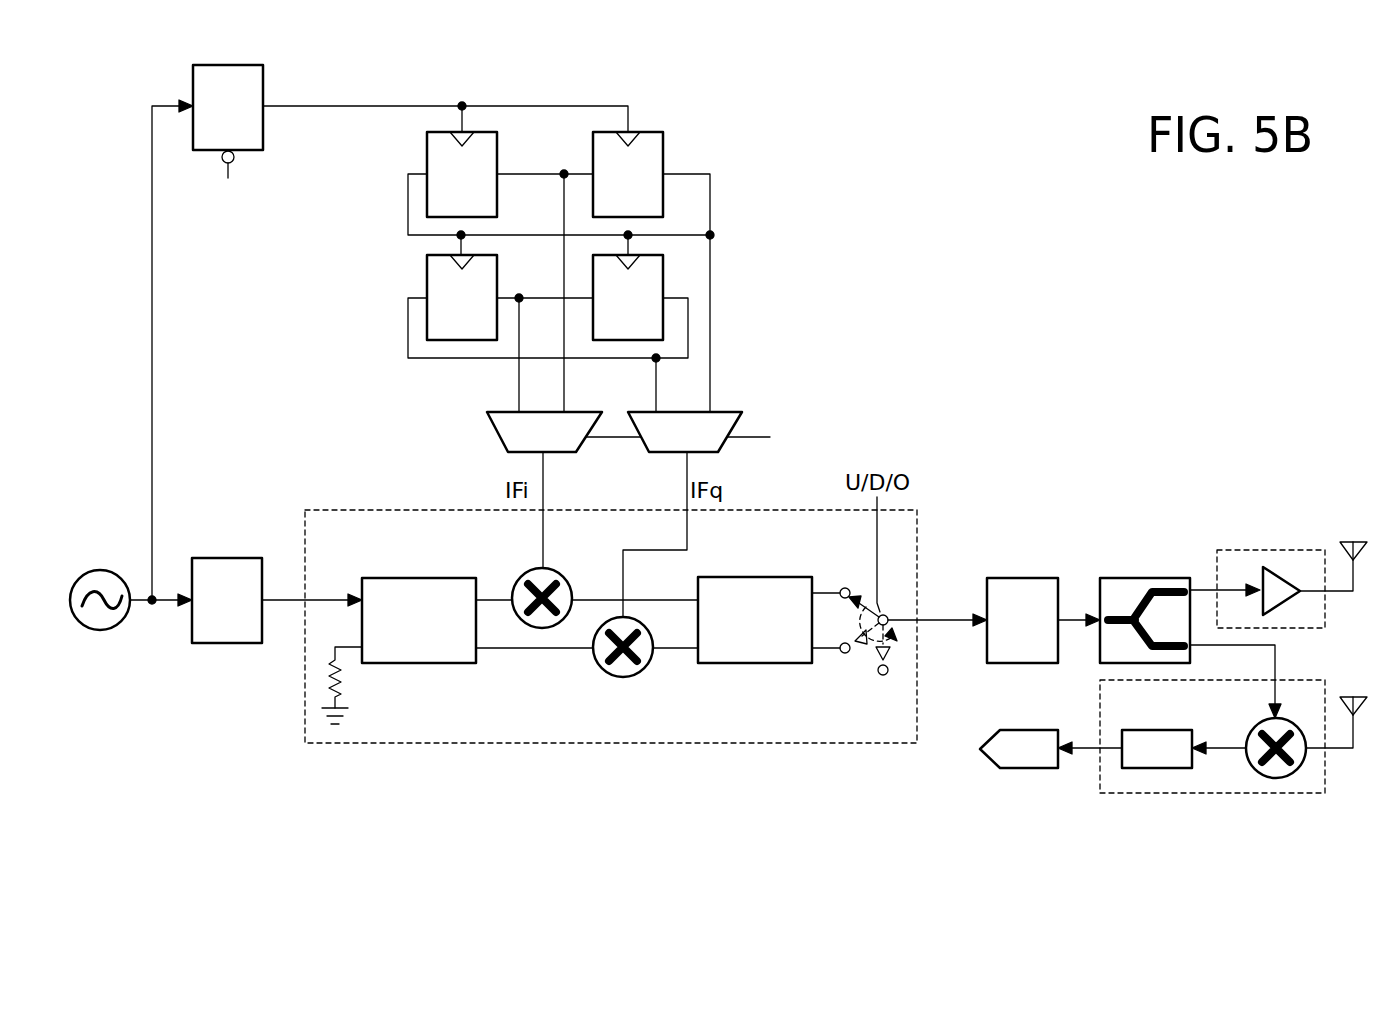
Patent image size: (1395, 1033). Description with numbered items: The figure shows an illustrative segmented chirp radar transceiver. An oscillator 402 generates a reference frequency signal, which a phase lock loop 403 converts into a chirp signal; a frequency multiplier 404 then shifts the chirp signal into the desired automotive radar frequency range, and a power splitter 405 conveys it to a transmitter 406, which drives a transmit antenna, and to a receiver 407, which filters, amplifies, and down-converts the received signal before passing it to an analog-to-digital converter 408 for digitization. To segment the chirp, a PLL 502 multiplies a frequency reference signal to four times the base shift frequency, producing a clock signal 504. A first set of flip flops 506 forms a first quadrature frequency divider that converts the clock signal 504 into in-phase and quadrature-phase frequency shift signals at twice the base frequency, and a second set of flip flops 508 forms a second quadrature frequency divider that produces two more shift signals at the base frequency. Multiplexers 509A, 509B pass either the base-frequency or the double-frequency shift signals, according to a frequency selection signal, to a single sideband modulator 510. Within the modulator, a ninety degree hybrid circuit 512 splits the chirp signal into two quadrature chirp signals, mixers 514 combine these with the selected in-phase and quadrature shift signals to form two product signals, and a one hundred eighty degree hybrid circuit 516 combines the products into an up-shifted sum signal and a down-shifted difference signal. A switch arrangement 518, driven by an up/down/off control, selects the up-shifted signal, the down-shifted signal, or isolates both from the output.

The oscillator 402 is at (98, 632).
The phase lock loop 403 is at (205, 556).
The frequency multiplier 404 is at (998, 576).
The power splitter 405 is at (1112, 576).
The transmitter 406 is at (1228, 548).
The receiver 407 is at (1232, 797).
The analog-to-digital converter 408 is at (1045, 770).
The PLL 502 is at (264, 130).
The clock signal 504 is at (330, 104).
The first set of flip flops 506 is at (730, 103).
The second set of flip flops 508 is at (730, 238).
The multiplexer 509A is at (499, 432).
The multiplexer 509B is at (738, 426).
The single sideband modulator 510 is at (330, 510).
The 90 degree hybrid circuit 512 is at (372, 576).
The mixers 514 is at (665, 682).
The 180 degree hybrid circuit 516 is at (712, 576).
The switch arrangement 518 is at (887, 682).